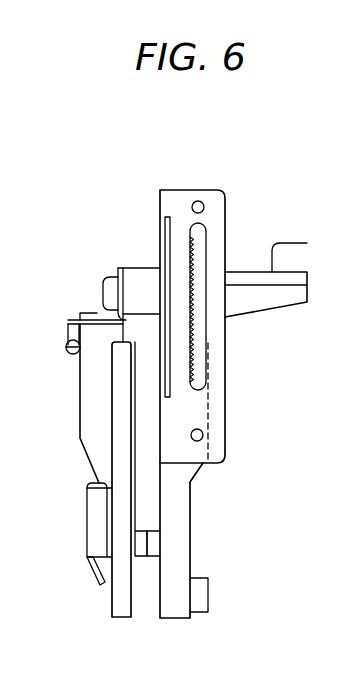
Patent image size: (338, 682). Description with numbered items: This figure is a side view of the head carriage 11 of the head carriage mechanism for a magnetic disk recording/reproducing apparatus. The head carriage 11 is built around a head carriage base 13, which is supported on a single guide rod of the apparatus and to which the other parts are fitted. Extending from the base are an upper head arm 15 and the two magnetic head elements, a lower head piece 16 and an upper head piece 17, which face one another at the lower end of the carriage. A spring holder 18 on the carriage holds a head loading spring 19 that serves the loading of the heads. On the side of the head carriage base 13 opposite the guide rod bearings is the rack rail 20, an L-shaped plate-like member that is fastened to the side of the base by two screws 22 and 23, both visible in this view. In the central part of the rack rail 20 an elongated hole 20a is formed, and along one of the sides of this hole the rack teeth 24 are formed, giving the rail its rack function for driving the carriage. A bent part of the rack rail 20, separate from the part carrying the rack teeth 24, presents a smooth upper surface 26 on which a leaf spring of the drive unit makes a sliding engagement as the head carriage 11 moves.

The head carriage 11 is at (267, 136).
The head carriage base 13 is at (175, 533).
The upper head arm 15 is at (116, 600).
The lower head piece 16 is at (151, 558).
The upper head piece 17 is at (140, 558).
The spring holder 18 is at (72, 320).
The head loading spring 19 is at (78, 390).
The rack rail 20 is at (163, 185).
The elongated hole 20a is at (198, 335).
The screw 22 is at (204, 435).
The screw 23 is at (198, 201).
The rack teeth 24 is at (196, 246).
The smooth upper surface 26 is at (160, 238).